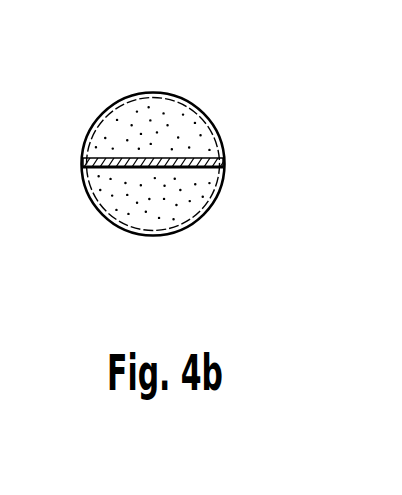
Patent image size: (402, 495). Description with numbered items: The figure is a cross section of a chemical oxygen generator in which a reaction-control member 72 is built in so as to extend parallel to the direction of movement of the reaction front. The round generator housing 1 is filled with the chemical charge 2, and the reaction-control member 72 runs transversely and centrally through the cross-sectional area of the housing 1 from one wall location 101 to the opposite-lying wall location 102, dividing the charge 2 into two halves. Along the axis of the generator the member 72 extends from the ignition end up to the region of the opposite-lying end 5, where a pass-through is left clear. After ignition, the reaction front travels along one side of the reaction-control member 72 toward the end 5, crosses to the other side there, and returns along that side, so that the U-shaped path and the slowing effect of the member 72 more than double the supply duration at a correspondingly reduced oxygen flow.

The generator housing 1 is at (195, 220).
The chemical charge 2 is at (142, 112).
The end of the generator 5 is at (0, 143).
The reaction-control member 72 is at (183, 157).
The wall location 101 is at (88, 157).
The opposite-lying wall location 102 is at (223, 160).